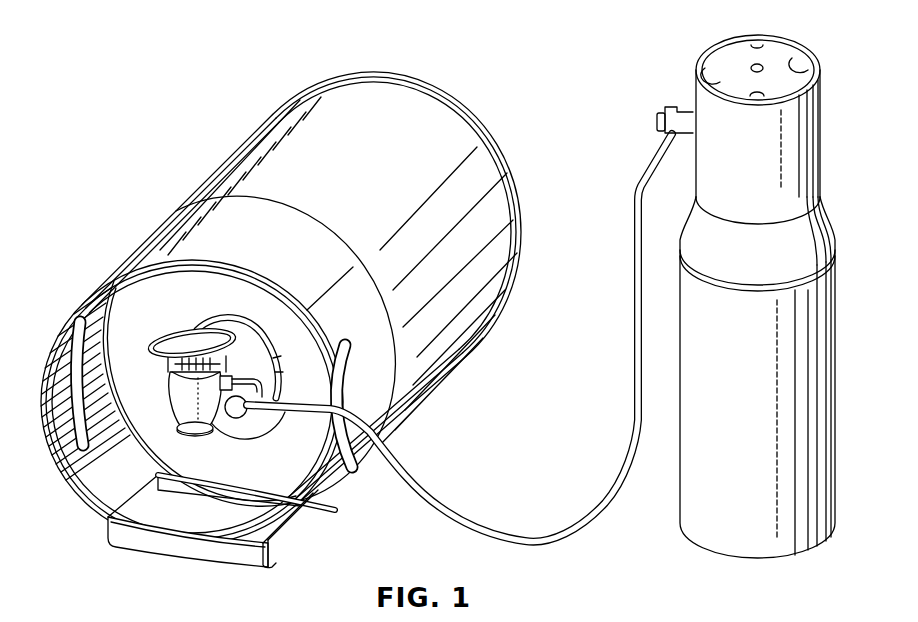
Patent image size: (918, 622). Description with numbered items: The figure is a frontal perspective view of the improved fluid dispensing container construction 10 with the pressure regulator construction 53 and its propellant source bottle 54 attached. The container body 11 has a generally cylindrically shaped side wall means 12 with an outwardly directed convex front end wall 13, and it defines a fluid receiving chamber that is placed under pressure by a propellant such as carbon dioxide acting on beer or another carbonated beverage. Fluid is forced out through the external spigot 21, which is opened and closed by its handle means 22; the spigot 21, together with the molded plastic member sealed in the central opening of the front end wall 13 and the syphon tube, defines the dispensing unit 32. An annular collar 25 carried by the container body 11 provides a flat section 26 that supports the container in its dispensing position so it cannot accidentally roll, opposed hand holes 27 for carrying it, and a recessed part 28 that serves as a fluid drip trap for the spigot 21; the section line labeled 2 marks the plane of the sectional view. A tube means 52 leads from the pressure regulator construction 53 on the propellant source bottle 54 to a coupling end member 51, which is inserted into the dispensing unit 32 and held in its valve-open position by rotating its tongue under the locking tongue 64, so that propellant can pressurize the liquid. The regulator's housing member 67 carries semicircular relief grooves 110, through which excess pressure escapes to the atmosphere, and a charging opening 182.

The fluid dispensing container construction 10 is at (515, 101).
The container body 11 is at (231, 150).
The side wall means 12 is at (498, 203).
The front end wall 13 is at (200, 300).
The section line 2- 2 is at (195, 262).
The spigot 21 is at (188, 402).
The handle means 22 is at (175, 343).
The annular collar 25 is at (277, 217).
The flat section 26 is at (247, 563).
The hand holes 27 is at (72, 340).
The recessed part 28 is at (170, 521).
The dispensing unit 32 is at (249, 441).
The coupling end member 51 is at (253, 395).
The tube means 52 is at (440, 503).
The pressure regulator construction 53 is at (832, 126).
The propellant source bottle 54 is at (807, 453).
The locking tongue 64 is at (232, 378).
The housing member 67 is at (773, 55).
The relief grooves 110 is at (797, 62).
The charging opening 182 is at (757, 67).